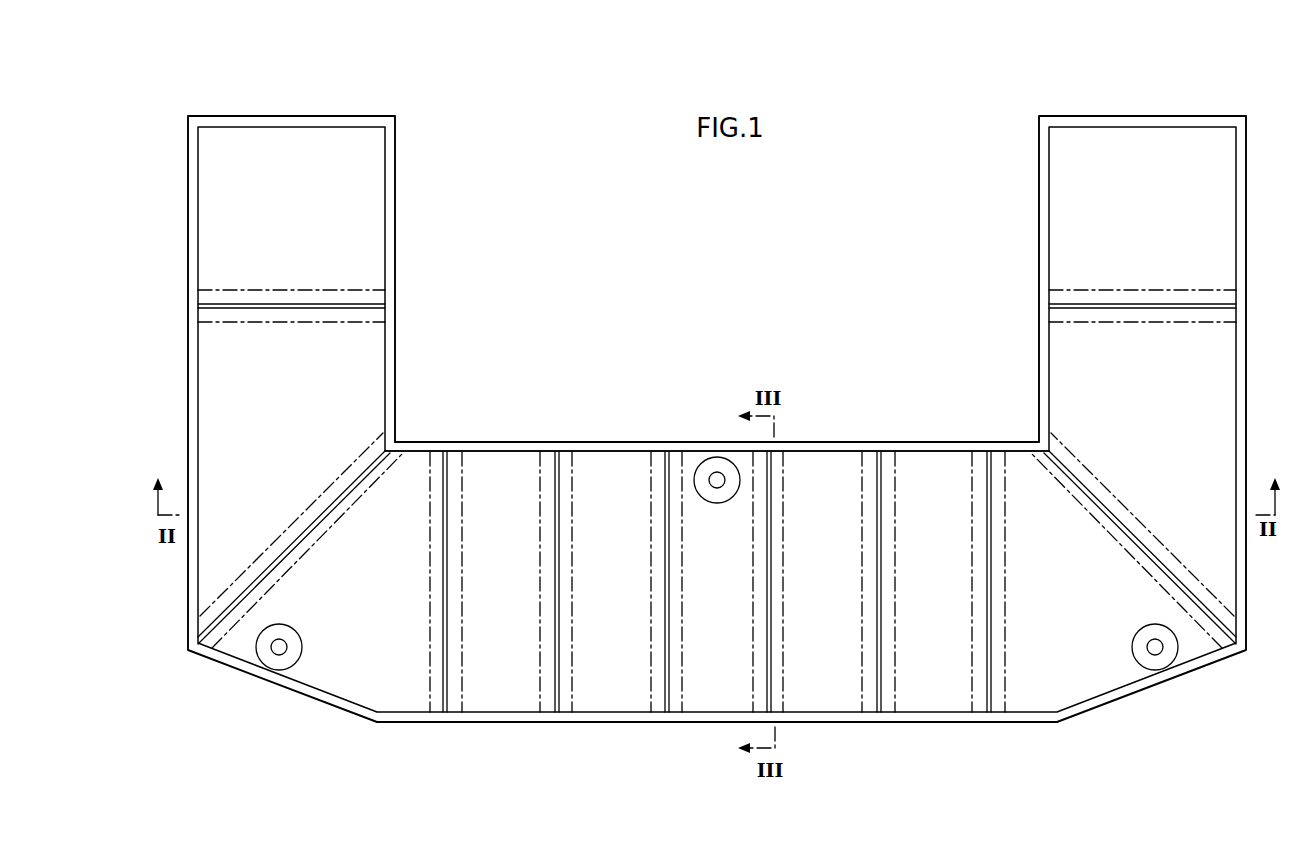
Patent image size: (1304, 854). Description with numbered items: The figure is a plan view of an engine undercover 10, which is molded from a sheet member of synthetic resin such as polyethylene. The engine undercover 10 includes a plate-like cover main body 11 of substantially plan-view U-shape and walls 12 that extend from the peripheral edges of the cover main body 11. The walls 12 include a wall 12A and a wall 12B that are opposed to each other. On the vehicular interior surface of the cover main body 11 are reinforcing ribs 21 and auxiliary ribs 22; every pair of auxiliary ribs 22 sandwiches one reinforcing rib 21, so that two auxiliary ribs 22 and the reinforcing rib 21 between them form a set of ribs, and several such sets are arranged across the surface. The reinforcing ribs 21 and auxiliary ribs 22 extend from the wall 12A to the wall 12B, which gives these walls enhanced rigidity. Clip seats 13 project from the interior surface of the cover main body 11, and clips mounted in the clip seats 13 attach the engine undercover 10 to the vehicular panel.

The engine undercover 10 is at (247, 92).
The cover main body 11 is at (495, 470).
The walls 12 is at (822, 434).
The wall 12A is at (924, 443).
The wall 12B is at (958, 713).
The clip seat 13 is at (279, 658).
The reinforcing rib 21 is at (443, 690).
The auxiliary rib 22 is at (430, 680).